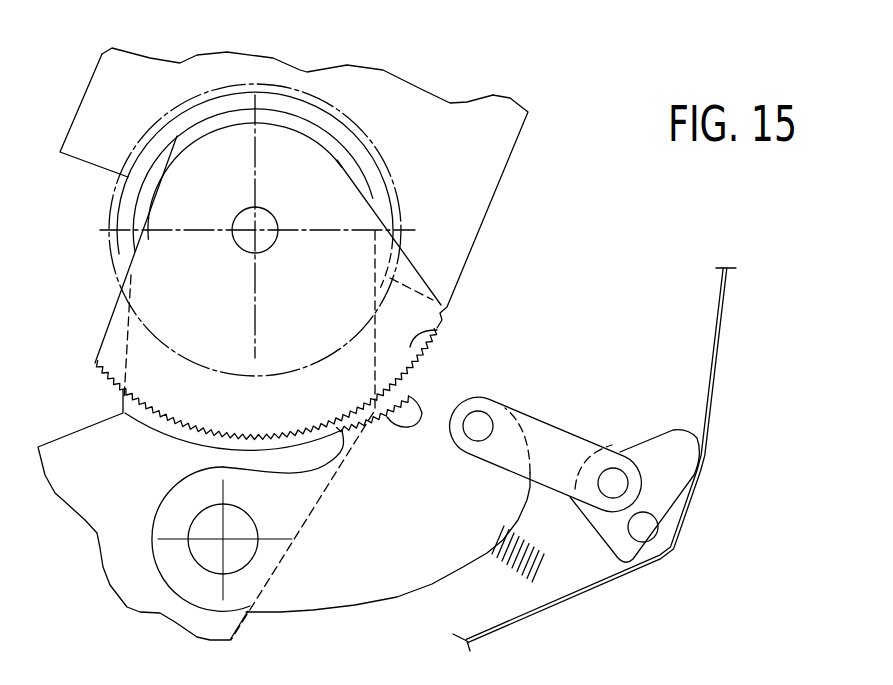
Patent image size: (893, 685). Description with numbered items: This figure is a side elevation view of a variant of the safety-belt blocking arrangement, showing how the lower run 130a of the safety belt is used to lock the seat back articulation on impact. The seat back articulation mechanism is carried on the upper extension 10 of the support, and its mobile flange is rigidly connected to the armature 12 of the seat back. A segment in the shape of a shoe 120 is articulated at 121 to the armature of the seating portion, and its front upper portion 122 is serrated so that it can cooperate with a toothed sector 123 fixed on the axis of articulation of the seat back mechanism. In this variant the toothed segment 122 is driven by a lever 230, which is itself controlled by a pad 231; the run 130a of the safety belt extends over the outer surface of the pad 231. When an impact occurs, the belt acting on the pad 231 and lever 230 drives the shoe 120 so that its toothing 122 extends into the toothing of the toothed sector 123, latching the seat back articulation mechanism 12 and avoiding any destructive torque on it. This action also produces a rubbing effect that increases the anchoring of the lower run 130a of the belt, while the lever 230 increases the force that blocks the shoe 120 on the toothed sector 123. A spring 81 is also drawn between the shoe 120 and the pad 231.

The upper extension 10 is at (183, 183).
The armature 12 is at (476, 63).
The spring 81 is at (503, 568).
The shoe-shaped segment 120 is at (394, 532).
The articulation point 121 is at (204, 525).
The serrated front upper portion 122 is at (423, 413).
The toothed sector 123 is at (440, 327).
The lower run of the safety belt 130a is at (718, 350).
The lever 230 is at (543, 444).
The pad 231 is at (668, 469).